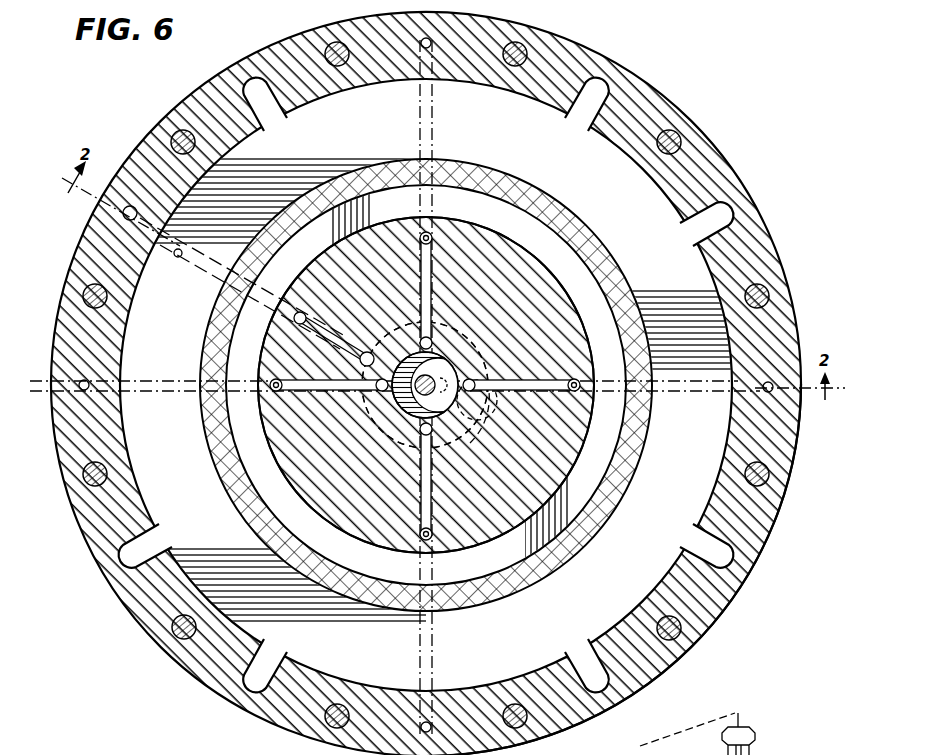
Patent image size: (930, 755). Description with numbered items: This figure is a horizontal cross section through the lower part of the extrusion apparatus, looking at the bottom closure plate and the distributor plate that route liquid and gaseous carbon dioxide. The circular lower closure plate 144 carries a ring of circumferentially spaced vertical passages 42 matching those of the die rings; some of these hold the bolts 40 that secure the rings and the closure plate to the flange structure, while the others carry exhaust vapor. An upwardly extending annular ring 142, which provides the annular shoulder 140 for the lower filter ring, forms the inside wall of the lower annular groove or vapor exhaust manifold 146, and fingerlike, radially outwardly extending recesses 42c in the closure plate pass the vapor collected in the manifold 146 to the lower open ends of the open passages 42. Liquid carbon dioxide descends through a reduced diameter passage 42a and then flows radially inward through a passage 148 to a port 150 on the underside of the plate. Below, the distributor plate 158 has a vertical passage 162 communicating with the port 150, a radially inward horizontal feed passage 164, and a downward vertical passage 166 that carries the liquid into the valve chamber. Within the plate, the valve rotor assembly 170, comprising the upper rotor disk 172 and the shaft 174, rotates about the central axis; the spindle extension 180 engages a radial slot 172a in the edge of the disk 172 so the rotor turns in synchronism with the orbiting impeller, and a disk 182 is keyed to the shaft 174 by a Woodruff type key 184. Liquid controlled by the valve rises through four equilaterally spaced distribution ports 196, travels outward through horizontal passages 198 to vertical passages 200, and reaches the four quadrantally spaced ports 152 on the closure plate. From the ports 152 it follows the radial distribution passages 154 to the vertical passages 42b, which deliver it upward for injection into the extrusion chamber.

The bolts 40 is at (505, 712).
The vertical passages 42 is at (527, 714).
The reduced diameter passages 42a is at (146, 202).
The reduced diameter passages 42b is at (425, 388).
The radially outwardly extending recesses 42c is at (426, 385).
The annular shoulder 140 is at (423, 385).
The upwardly extending annular ring 142 is at (467, 572).
The lower closure plate 144 is at (692, 668).
The vapor exhaust manifold 146 is at (443, 386).
The passage 148 is at (176, 257).
The port 150 is at (420, 368).
The ports 152 is at (422, 387).
The distribution passages 154 is at (437, 387).
The distributor plate 158 is at (426, 385).
The vertical passage 162 is at (305, 312).
The horizontal feed passage 164 is at (330, 328).
The vertical passage 166 is at (360, 362).
The valve rotor assembly 170 is at (471, 324).
The upper rotor disk 172 is at (489, 335).
The radial slot 172a is at (485, 428).
The shaft 174 is at (397, 408).
The spindle extension 180 is at (492, 401).
The disk 182 is at (438, 411).
The Woodruff type key 184 is at (432, 377).
The distribution ports 196 is at (444, 369).
The horizontal passages 198 is at (425, 386).
The vertical passages 200 is at (424, 386).